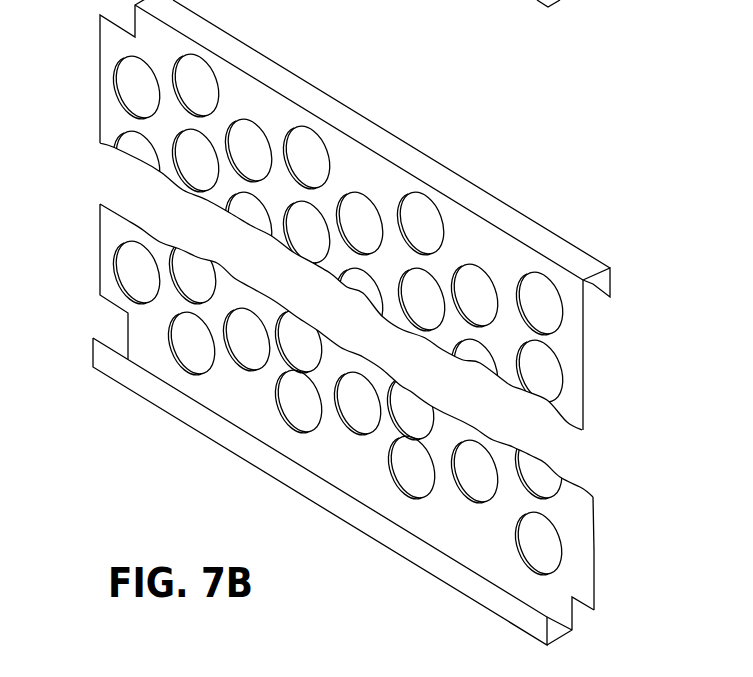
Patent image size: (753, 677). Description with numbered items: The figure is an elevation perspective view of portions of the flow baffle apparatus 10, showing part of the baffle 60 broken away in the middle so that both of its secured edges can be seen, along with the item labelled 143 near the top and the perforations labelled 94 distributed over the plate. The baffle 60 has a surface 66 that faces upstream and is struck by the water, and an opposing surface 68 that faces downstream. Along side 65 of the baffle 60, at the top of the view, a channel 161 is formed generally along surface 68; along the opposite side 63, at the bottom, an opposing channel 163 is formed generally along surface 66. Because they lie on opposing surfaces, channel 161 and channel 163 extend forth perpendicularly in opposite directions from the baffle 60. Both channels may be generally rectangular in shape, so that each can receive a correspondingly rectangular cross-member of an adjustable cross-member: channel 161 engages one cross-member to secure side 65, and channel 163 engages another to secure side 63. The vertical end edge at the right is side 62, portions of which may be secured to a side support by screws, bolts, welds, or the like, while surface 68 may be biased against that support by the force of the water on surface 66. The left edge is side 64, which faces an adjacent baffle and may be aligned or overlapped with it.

The flow baffle apparatus 10 is at (578, 120).
The baffle 60 is at (158, 137).
The side of baffle 62 is at (573, 340).
The side of baffle 63 is at (482, 588).
The side of baffle 64 is at (105, 105).
The side of baffle 65 is at (473, 195).
The surface of baffle 66 is at (582, 548).
The surface of baffle 68 is at (595, 522).
The perforations 94 is at (365, 400).
The connector bracket 143 is at (593, 0).
The channel 161 is at (597, 290).
The channel 163 is at (560, 608).